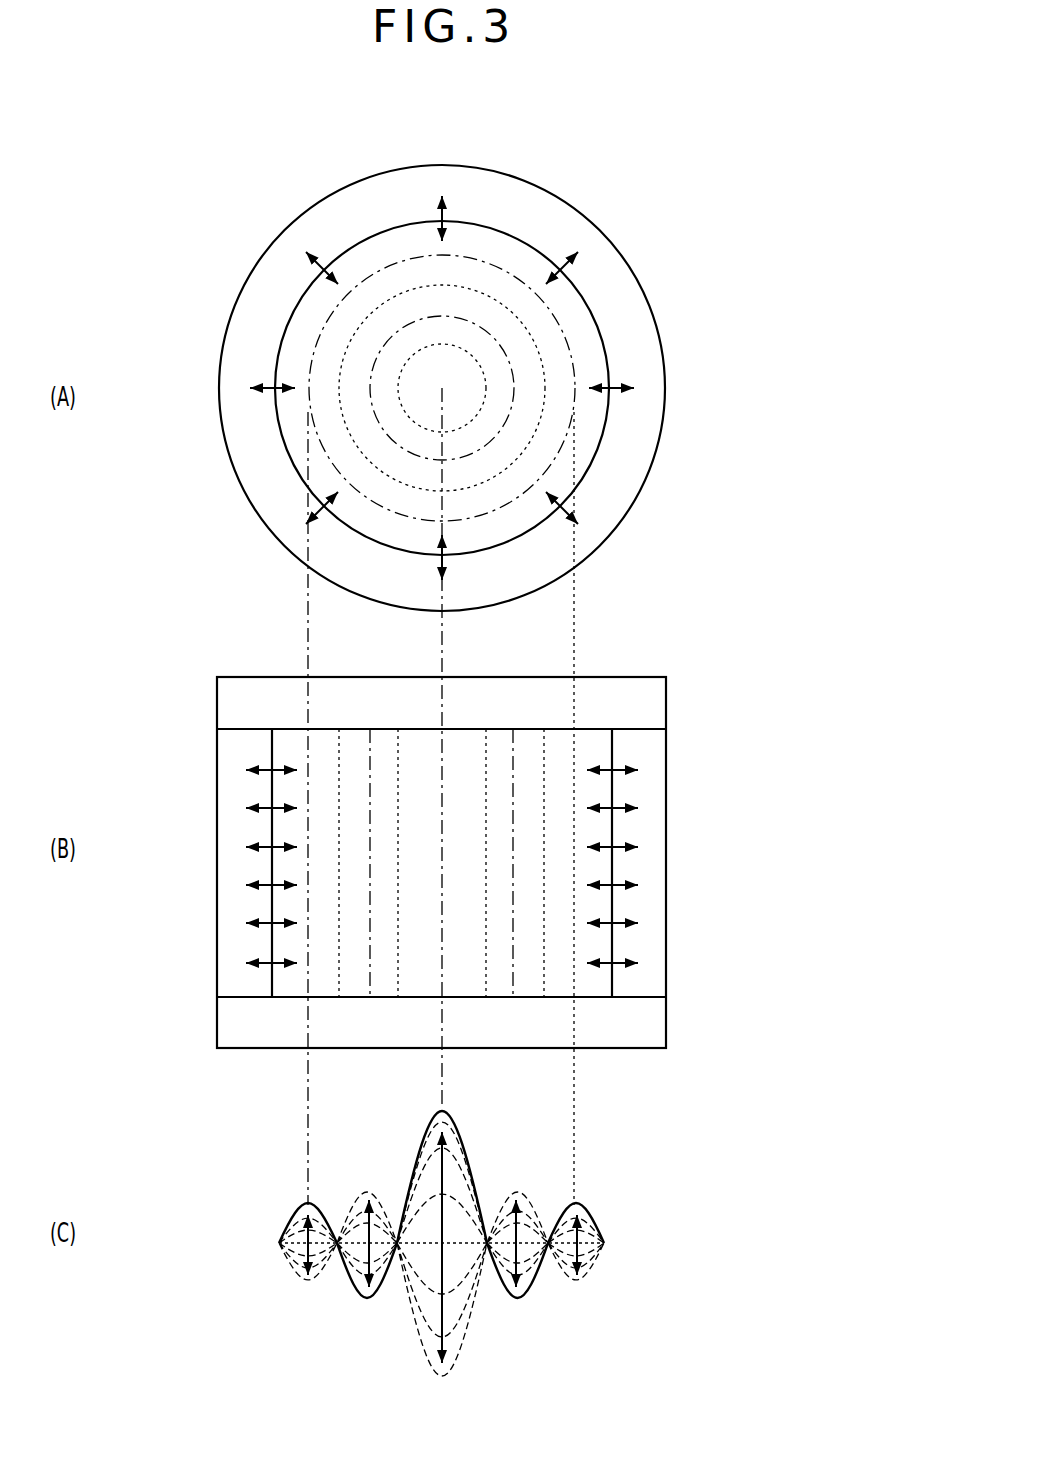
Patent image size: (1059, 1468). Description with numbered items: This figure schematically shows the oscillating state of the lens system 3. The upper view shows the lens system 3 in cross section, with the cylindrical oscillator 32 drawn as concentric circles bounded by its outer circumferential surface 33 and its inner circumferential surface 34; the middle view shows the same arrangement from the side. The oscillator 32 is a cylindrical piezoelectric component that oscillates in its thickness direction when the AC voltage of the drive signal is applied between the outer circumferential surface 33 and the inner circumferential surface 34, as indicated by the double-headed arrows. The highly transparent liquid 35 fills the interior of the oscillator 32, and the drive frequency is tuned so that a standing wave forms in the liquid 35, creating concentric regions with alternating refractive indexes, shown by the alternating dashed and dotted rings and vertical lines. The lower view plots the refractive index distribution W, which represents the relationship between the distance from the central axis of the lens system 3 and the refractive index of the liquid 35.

The lens system 3 is at (235, 213).
The oscillator 32 is at (503, 200).
The outer circumferential surface 33 is at (557, 193).
The inner circumferential surface 34 is at (525, 240).
The liquid 35 is at (525, 353).
The refractive index distribution W is at (308, 1205).